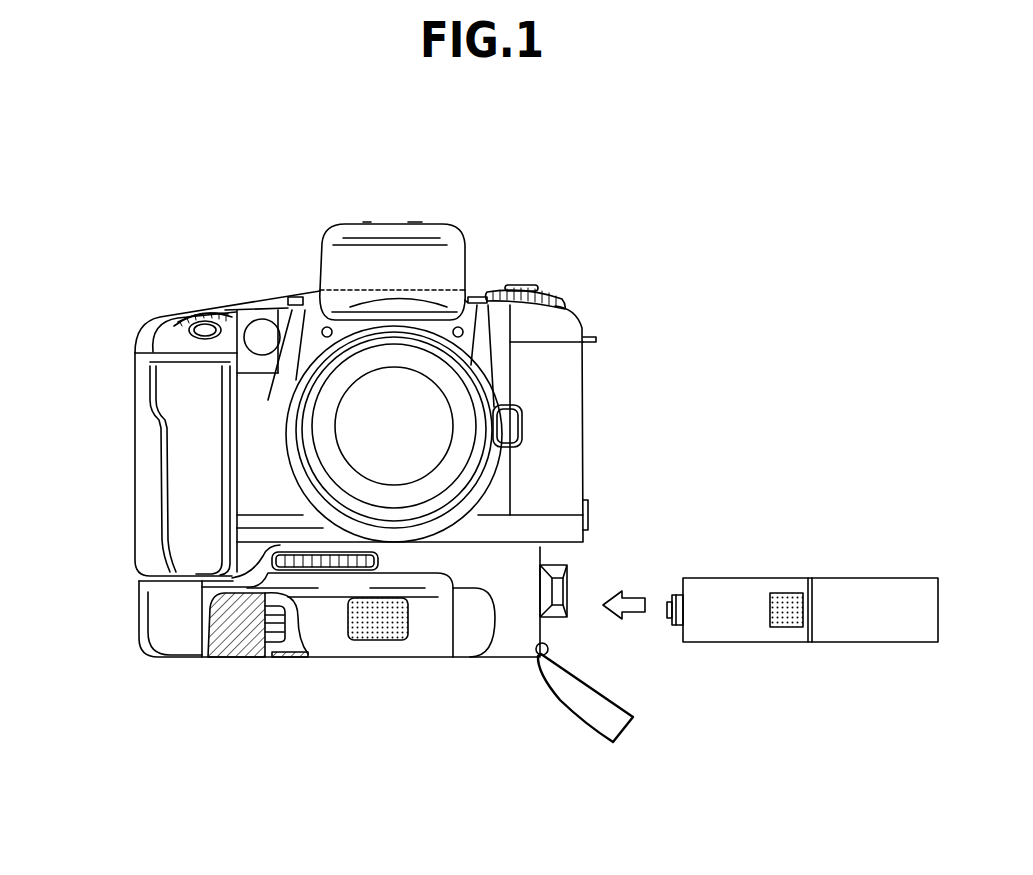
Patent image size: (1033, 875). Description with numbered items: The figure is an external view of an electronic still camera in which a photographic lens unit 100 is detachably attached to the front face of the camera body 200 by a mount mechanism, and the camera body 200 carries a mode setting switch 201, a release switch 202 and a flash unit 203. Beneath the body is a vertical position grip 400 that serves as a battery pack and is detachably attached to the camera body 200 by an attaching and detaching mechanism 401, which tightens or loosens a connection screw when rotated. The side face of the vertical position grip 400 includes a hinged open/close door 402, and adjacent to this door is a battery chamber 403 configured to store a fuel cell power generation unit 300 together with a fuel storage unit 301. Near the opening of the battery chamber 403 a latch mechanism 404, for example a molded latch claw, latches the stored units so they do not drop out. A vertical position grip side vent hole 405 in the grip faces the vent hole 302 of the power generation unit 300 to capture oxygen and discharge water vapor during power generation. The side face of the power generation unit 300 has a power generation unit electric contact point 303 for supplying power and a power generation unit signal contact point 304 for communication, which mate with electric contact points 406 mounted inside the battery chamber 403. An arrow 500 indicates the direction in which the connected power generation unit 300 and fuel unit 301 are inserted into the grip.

The photographic lens unit 100 is at (482, 427).
The camera body 200 is at (133, 412).
The mode setting switch 201 is at (547, 292).
The release switch 202 is at (206, 326).
The flash unit 203 is at (393, 230).
The fuel cell power generation unit 300 is at (750, 578).
The fuel storage unit 301 is at (853, 578).
The vent hole 302 is at (787, 627).
The power generation unit electric contact point 303 is at (682, 585).
The power generation unit signal contact point 304 is at (668, 612).
The vertical position grip 400 is at (370, 660).
The attaching and detaching mechanism 401 is at (320, 570).
The open/close door 402 is at (609, 697).
The battery chamber 403 is at (278, 660).
The latch mechanism 404 is at (556, 563).
The vertical position grip side vent hole 405 is at (407, 638).
The electric contact points 406 is at (268, 655).
The arrow 500 is at (627, 592).